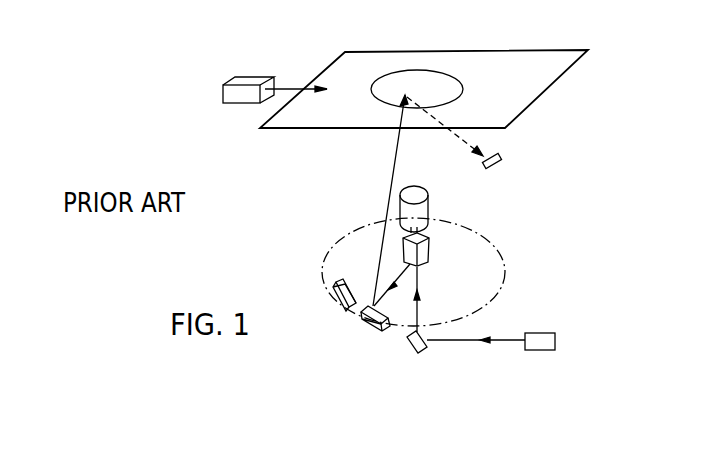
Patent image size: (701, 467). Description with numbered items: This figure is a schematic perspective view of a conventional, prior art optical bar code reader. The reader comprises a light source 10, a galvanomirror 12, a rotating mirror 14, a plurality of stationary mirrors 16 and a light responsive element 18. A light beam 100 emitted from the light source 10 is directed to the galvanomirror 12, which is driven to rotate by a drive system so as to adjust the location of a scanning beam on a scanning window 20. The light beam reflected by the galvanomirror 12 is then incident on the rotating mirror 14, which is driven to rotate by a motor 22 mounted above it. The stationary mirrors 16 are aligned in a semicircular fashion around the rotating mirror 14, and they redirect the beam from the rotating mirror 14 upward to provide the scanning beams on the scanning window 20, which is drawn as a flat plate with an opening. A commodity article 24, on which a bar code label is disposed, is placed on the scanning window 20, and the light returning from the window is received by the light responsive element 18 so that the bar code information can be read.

The light source 10 is at (535, 352).
The galvanomirror 12 is at (410, 350).
The rotating mirror 14 is at (423, 253).
The stationary mirrors 16 is at (338, 303).
The light responsive element 18 is at (503, 158).
The scanning window 20 is at (462, 97).
The motor 22 is at (423, 212).
The commodity article 24 is at (245, 90).
The light beam 100 is at (488, 342).